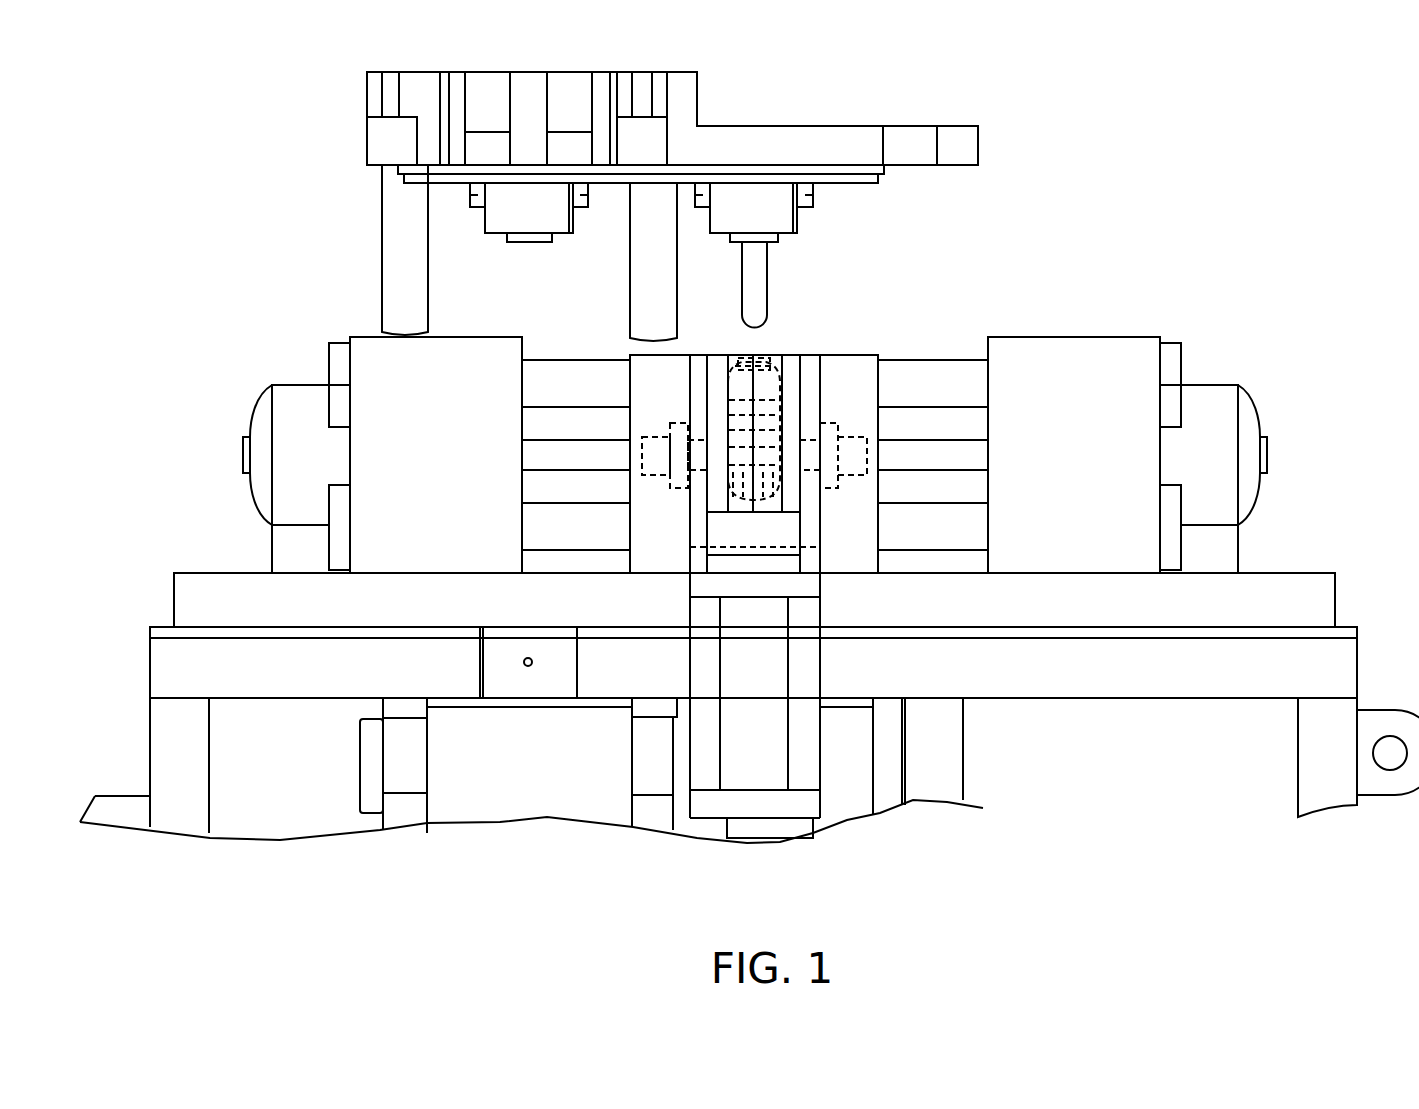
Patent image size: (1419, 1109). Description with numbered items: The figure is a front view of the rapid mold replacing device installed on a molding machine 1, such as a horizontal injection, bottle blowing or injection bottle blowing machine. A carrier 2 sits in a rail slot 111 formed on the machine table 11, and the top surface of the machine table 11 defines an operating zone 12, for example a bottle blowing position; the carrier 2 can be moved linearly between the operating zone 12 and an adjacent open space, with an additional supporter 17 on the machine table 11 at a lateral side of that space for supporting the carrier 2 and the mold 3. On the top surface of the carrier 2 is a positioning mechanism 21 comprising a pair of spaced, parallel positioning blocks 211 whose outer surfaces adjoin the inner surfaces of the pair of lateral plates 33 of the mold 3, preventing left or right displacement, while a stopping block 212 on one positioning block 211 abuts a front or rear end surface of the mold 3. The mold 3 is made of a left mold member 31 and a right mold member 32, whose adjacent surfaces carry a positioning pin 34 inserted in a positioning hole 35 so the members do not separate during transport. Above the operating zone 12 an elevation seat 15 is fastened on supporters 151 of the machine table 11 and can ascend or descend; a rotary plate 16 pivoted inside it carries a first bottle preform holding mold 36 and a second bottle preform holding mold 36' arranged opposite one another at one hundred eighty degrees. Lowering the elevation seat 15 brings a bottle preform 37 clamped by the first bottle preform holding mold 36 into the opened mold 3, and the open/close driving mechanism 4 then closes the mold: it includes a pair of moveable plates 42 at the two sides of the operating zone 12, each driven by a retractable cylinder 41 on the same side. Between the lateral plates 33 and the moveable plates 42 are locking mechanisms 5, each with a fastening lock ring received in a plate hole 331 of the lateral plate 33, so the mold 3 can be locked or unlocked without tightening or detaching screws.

The molding machine 1 is at (1280, 493).
The machine table 11 is at (1275, 592).
The rail slot 111 is at (820, 582).
The operating zone 12 is at (798, 290).
The elevation seat 15 is at (818, 140).
The supporters 151 is at (405, 237).
The rotary plate 16 is at (845, 178).
The additional supporter 17 is at (810, 722).
The carrier 2 is at (693, 722).
The positioning mechanism 21 is at (777, 547).
The positioning blocks 211 is at (727, 563).
The stopping block 212 is at (720, 550).
The mold 3 is at (779, 408).
The left mold member 31 is at (720, 366).
The right mold member 32 is at (793, 400).
The lateral plates 33 is at (815, 375).
The plate hole 331 is at (880, 425).
The positioning pin 34 is at (740, 368).
The positioning hole 35 is at (785, 368).
The first bottle preform holding mold 36 is at (806, 212).
The second bottle preform holding mold 36' is at (454, 212).
The bottle preform 37 is at (750, 262).
The open/close driving mechanism 4 is at (1075, 330).
The retractable cylinder 41 is at (422, 440).
The moveable plates 42 is at (645, 388).
The locking mechanism 5 is at (632, 462).